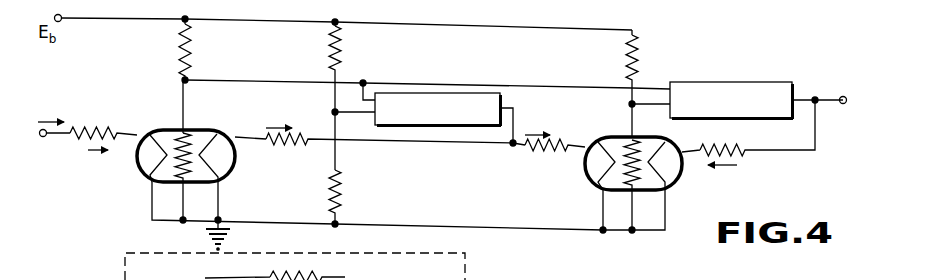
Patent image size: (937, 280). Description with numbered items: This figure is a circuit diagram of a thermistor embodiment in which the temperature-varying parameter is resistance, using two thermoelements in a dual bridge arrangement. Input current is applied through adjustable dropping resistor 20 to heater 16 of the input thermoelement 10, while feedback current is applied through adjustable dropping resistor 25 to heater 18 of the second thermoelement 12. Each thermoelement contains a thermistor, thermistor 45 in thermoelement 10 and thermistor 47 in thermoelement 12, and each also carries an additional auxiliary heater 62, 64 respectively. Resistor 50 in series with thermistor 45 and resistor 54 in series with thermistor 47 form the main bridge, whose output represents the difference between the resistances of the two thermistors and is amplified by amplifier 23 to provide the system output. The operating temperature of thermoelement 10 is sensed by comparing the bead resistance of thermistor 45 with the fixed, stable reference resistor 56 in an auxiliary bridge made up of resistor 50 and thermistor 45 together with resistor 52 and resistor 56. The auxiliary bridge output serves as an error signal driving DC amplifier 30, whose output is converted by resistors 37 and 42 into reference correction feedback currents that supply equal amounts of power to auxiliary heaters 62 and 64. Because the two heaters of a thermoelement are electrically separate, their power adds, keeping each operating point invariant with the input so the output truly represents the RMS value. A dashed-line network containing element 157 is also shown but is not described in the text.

The thermoelement 10 is at (173, 150).
The thermoelement 12 is at (637, 165).
The heater 16 is at (150, 170).
The heater 18 is at (653, 137).
The dropping resistor 20 is at (88, 128).
The amplifier 23 is at (720, 82).
The dropping resistor 25 is at (728, 144).
The DC amplifier 30 is at (440, 125).
The resistor 37 is at (276, 146).
The resistor 42 is at (556, 152).
The thermistor 45 is at (182, 176).
The thermistor 47 is at (612, 190).
The resistor 50 is at (192, 50).
The resistor 52 is at (343, 52).
The resistor 54 is at (640, 62).
The reference resistor 56 is at (342, 190).
The auxiliary heater 62 is at (206, 130).
The auxiliary heater 64 is at (614, 152).
The resistor R2 (alternative network) 157 is at (274, 276).